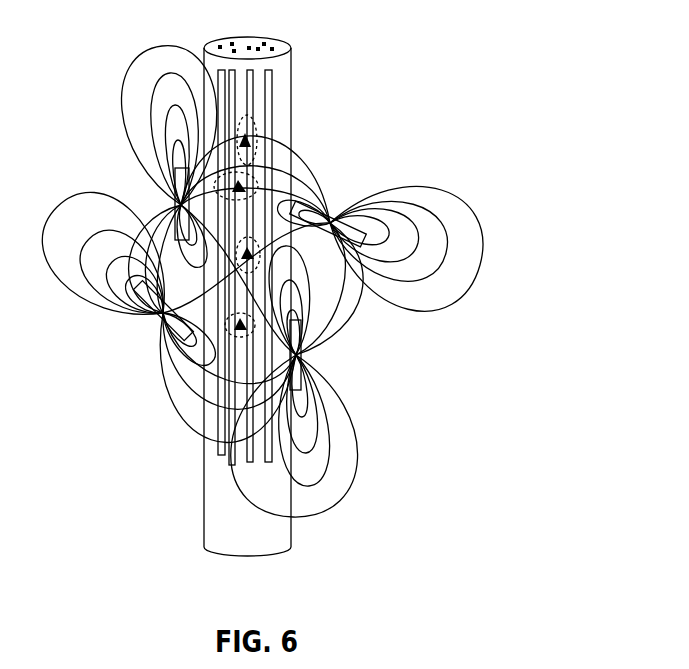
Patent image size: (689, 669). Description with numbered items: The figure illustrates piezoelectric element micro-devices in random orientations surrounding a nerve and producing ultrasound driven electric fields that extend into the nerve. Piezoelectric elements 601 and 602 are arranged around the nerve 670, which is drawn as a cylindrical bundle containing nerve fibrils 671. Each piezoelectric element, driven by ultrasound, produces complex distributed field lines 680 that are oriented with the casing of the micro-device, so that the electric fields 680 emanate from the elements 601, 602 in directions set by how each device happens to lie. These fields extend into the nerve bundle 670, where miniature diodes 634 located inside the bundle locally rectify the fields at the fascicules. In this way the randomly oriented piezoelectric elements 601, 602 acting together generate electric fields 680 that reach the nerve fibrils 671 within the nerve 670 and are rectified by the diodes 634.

The nerve 670 is at (291, 54).
The nerve fibrils 671 is at (272, 77).
The miniature diodes 634 is at (262, 148).
The electric fields 680 is at (432, 253).
The piezoelectric element 601 is at (160, 205).
The piezoelectric element 602 is at (332, 228).